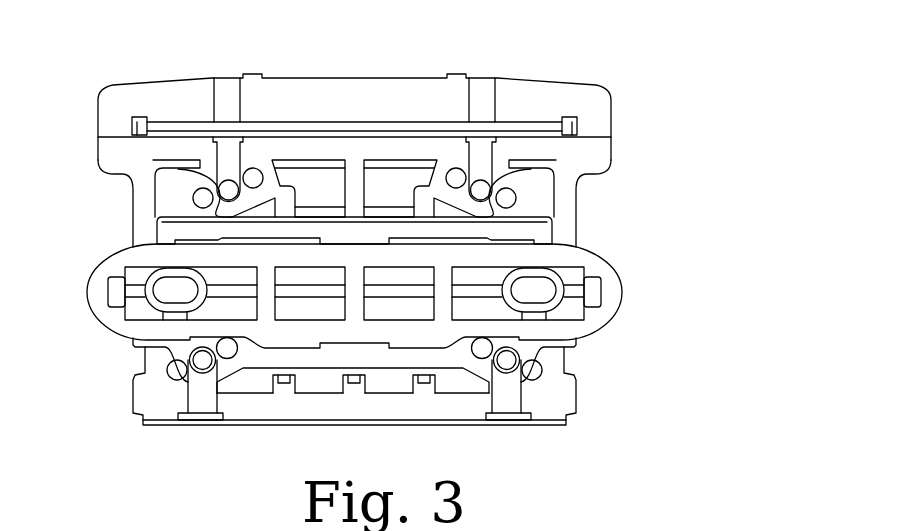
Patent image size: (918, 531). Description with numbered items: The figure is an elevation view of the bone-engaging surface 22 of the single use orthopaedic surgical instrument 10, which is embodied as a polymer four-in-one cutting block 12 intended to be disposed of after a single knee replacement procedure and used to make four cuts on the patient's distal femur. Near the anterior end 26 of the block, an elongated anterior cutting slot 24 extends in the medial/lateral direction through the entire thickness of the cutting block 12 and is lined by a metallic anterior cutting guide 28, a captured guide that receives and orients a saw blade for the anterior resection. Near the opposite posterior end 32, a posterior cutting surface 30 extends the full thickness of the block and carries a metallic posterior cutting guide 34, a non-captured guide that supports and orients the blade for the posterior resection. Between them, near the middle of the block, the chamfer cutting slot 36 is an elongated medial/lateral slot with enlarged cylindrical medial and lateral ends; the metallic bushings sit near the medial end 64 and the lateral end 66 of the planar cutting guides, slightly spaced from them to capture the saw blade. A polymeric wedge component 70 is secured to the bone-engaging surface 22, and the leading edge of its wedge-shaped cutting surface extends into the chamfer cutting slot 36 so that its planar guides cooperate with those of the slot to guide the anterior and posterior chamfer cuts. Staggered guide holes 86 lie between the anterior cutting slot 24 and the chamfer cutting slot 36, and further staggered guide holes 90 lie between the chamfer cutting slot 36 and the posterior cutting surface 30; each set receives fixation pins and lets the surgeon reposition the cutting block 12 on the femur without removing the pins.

The single use orthopaedic surgical instrument 10 is at (707, 75).
The 4-in-1 cutting block 12 is at (600, 102).
The bone-engaging surface 22 is at (564, 210).
The anterior cutting slot 24 is at (573, 130).
The anterior end 26 is at (101, 111).
The anterior cutting guide 28 is at (247, 129).
The posterior cutting surface 30 is at (537, 425).
The posterior end 32 is at (138, 403).
The posterior cutting guide 34 is at (493, 425).
The chamfer cutting slot 36 is at (530, 221).
The medial end 64 is at (556, 228).
The lateral end 66 is at (150, 237).
The wedge component 70 is at (112, 328).
The guide holes 86 is at (192, 203).
The guide holes 90 is at (176, 372).